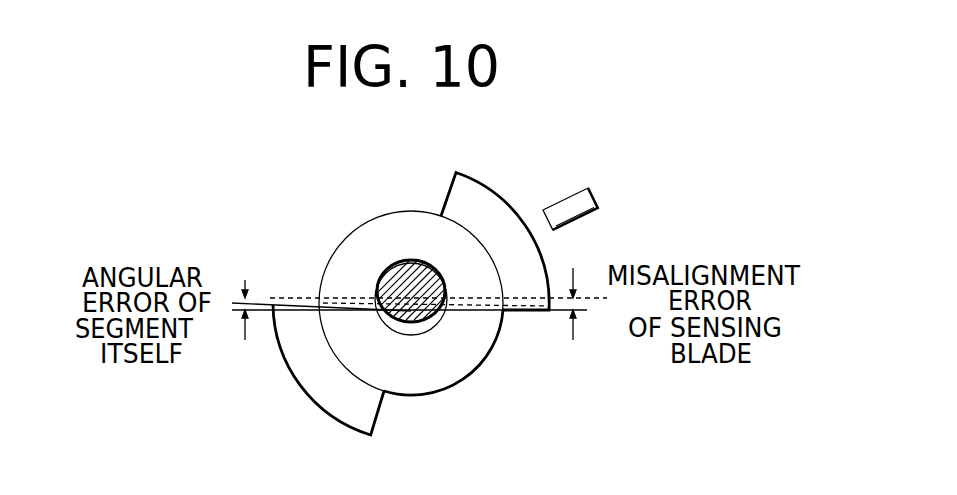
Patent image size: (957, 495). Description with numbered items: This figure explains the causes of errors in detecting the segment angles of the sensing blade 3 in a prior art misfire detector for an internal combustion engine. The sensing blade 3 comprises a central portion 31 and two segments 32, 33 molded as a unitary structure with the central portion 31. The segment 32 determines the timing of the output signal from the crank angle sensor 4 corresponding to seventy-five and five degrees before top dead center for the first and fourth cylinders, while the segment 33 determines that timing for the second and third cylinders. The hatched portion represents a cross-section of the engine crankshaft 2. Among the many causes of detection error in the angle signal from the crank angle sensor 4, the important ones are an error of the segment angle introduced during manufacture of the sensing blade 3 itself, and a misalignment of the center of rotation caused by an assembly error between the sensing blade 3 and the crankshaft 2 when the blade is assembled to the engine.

The engine crankshaft 2 is at (413, 323).
The sensing blade 3 is at (410, 293).
The central portion 31 is at (367, 220).
The segment 32 is at (498, 190).
The segment 33 is at (312, 407).
The crank angle sensor 4 is at (566, 197).